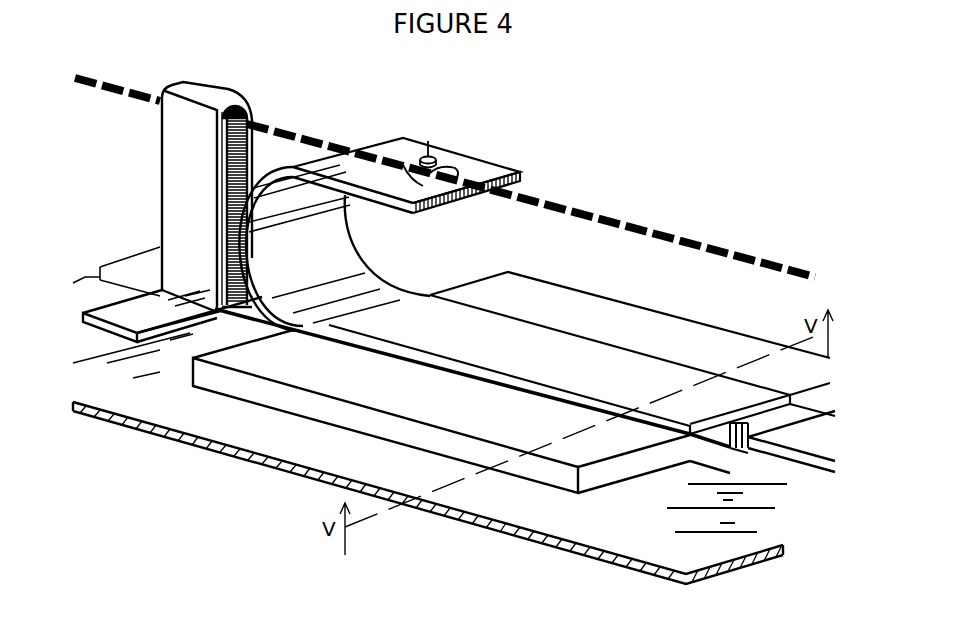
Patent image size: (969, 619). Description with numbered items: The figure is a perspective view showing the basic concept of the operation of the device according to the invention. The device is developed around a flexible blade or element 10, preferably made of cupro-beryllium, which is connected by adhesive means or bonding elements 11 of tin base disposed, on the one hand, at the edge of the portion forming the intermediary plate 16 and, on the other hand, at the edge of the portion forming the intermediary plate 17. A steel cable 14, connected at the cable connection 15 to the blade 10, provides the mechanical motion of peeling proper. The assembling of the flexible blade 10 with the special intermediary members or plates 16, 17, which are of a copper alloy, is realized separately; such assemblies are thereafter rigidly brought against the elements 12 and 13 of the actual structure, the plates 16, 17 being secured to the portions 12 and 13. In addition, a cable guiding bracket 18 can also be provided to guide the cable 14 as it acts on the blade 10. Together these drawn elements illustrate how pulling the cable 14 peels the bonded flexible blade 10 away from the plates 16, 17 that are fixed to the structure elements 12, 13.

The flexible blade 10 is at (345, 252).
The bonding elements 11 is at (714, 434).
The structure element 12 is at (818, 440).
The structure element 13 is at (352, 464).
The cable 14 is at (618, 219).
The cable connection 15 is at (433, 156).
The intermediary plate 16 is at (630, 323).
The intermediary plate 17 is at (238, 367).
The cable guiding bracket 18 is at (207, 82).